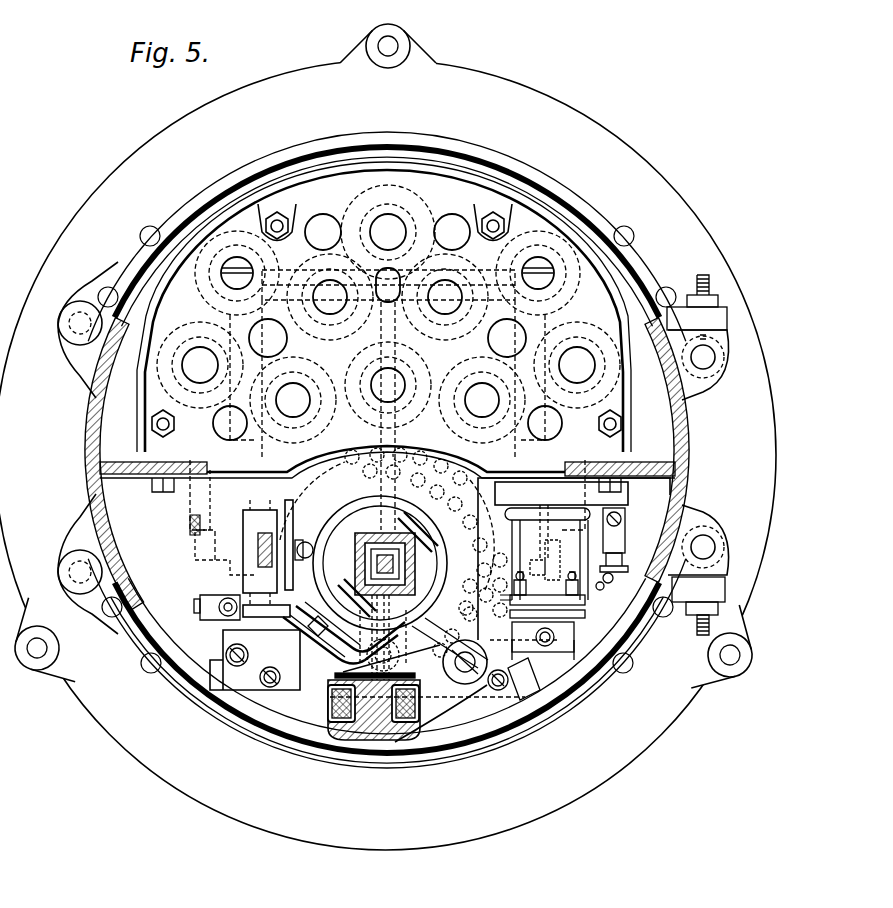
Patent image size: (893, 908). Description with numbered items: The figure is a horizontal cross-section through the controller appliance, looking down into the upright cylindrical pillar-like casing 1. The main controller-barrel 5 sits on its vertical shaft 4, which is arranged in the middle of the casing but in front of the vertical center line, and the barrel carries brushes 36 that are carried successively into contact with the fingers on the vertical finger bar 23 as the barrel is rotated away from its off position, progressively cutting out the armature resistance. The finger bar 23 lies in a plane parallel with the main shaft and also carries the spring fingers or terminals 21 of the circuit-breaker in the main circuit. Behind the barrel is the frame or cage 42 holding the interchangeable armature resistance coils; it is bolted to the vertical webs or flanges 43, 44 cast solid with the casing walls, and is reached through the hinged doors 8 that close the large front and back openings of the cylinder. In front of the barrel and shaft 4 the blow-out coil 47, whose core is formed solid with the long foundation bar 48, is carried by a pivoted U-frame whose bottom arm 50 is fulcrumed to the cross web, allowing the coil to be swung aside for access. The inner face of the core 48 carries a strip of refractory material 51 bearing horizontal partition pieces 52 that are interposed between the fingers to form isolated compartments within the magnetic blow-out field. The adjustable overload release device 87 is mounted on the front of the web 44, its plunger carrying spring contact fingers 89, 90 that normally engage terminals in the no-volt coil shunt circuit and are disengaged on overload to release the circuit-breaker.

The pillar-like casing 1 is at (683, 455).
The shaft of the main controller-barrel 4 is at (404, 570).
The main controller-barrel 5 is at (416, 546).
The hinged doors 8 is at (500, 733).
The spring fingers or terminals 21 is at (337, 663).
The vertical finger bar 23 is at (270, 518).
The brushes 36 is at (345, 522).
The frame or cage 42 is at (384, 361).
The vertical web or flange 43 is at (158, 468).
The vertical web or flange 44 is at (640, 480).
The blow-out coil 47 is at (421, 705).
The foundation bar 48 is at (377, 718).
The bottom arm 50 is at (467, 691).
The strip of refractory material 51 is at (416, 675).
The partition pieces 52 is at (389, 640).
The adjustable overload release device 87 is at (575, 571).
The spring contact finger 89 is at (580, 630).
The spring contact finger 90 is at (516, 638).